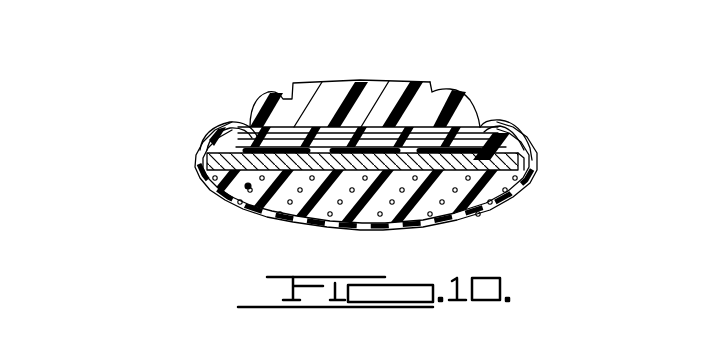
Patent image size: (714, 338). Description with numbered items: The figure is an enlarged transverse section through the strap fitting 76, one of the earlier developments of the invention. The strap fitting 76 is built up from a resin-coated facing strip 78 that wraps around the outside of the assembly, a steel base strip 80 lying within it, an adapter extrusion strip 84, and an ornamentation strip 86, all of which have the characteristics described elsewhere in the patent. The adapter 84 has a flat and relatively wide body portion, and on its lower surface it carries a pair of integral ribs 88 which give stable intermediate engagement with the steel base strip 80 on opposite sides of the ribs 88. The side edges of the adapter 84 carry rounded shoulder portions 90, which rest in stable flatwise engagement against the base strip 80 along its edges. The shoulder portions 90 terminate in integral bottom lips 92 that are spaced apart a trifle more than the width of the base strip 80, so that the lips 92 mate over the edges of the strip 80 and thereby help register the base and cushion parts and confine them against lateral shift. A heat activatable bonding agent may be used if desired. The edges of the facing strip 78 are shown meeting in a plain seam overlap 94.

The strap fitting 76 is at (128, 138).
The resin-coated facing strip 78 is at (210, 183).
The steel base strip 80 is at (532, 148).
The adapter extrusion strip 84 is at (477, 123).
The ornamentation strip 86 is at (432, 92).
The integral ribs 88 is at (318, 153).
The rounded shoulder portions 90 is at (216, 138).
The integral bottom lips 92 is at (207, 161).
The plain seam overlap 94 is at (386, 127).